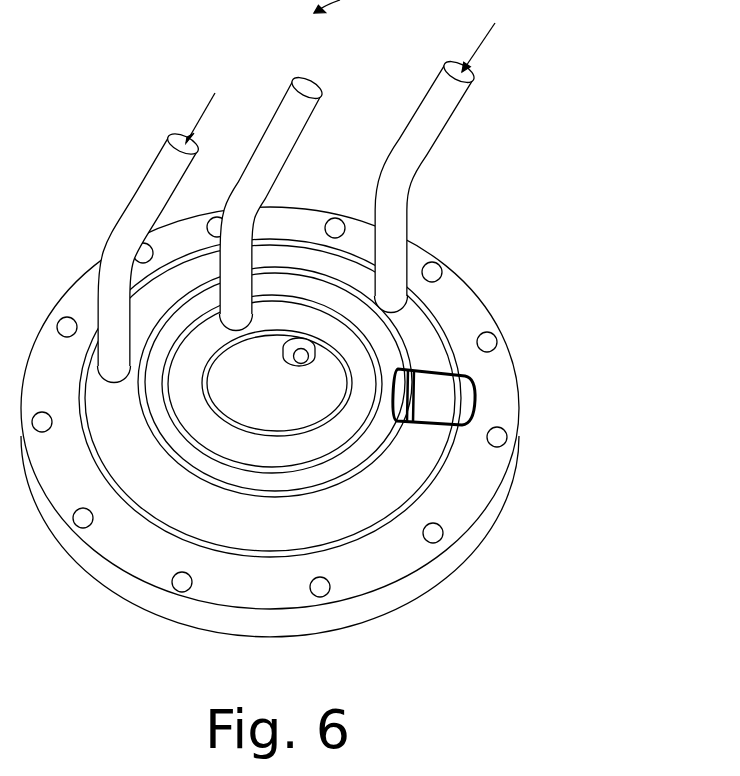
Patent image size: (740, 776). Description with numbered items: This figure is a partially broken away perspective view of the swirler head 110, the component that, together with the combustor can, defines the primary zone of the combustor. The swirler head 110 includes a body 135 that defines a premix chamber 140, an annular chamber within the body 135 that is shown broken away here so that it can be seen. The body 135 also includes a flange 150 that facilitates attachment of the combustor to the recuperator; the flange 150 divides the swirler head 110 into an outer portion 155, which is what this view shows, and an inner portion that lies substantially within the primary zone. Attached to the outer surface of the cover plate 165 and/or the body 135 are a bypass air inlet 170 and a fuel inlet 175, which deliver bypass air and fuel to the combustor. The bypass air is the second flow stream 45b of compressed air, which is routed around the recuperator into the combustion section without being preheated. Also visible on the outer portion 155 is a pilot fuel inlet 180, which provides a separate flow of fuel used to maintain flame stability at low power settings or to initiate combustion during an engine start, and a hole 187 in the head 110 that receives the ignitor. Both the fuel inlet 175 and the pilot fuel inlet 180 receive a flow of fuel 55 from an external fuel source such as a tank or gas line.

The swirler head 110 is at (613, 127).
The body 135 is at (130, 552).
The premix chamber 140 is at (442, 398).
The flange 150 is at (487, 535).
The outer portion 155 is at (467, 315).
The cover plate 165 is at (283, 543).
The bypass air inlet 170 is at (133, 218).
The fuel inlet 175 is at (405, 168).
The pilot fuel inlet 180 is at (264, 167).
The hole 187 is at (287, 355).
The second flow stream 45b is at (203, 110).
The flow of fuel 55 is at (482, 43).